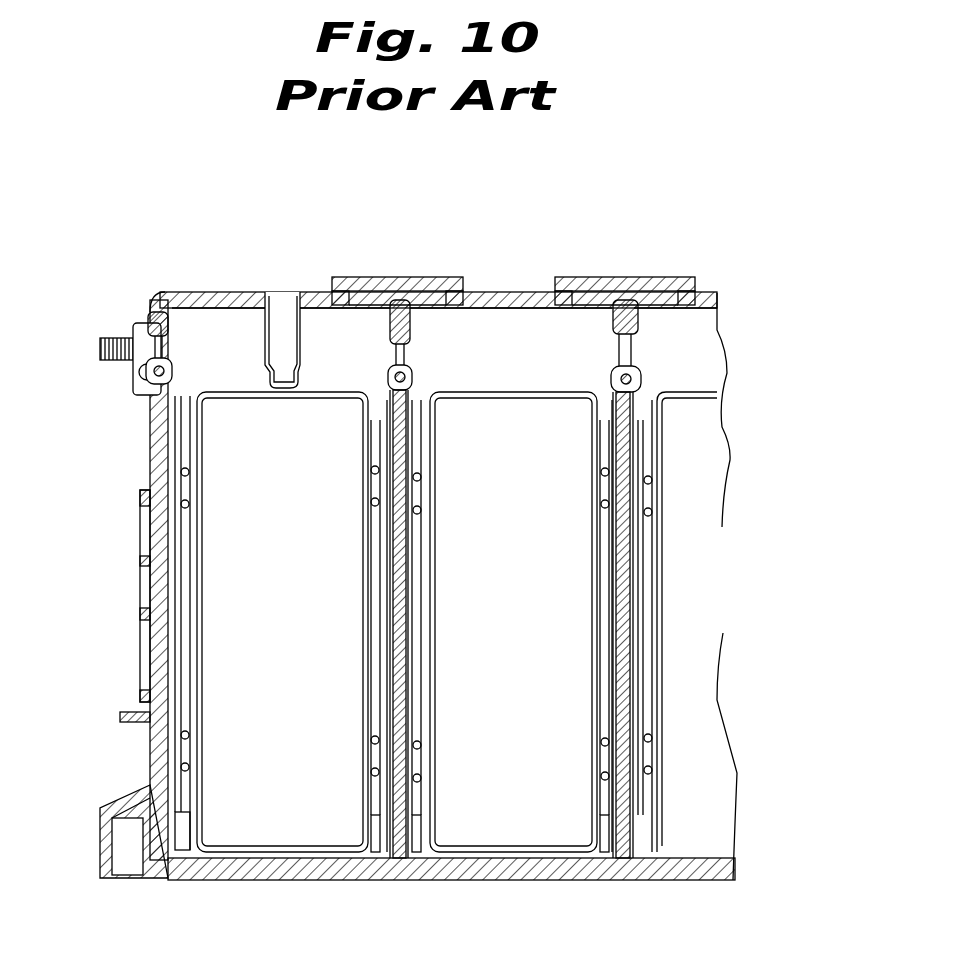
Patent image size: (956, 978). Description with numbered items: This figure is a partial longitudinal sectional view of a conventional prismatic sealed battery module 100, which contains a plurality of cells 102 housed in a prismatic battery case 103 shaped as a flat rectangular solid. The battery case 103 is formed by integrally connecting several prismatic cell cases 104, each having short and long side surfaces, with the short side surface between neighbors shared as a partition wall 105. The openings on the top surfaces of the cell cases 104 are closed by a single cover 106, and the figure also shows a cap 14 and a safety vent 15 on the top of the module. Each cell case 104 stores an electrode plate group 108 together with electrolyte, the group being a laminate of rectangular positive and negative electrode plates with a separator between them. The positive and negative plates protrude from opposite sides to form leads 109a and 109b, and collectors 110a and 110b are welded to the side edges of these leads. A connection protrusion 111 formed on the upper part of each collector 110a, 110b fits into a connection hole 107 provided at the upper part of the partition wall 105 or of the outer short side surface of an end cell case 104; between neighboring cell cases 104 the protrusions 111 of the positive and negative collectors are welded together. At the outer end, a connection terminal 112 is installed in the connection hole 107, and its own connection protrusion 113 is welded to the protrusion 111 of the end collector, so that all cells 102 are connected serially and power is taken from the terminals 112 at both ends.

The prismatic sealed battery module 100 is at (160, 262).
The cell 102 is at (176, 852).
The prismatic battery case 103 is at (138, 584).
The cell case 104 is at (262, 373).
The partition wall 105 is at (400, 448).
The cover 106 is at (210, 292).
The connection hole 107 is at (140, 400).
The electrode plate group 108 is at (282, 559).
The lead for the positive electrode plate 109a is at (413, 562).
The lead for the negative electrode plate 109b is at (372, 578).
The positive collector 110a is at (150, 650).
The negative collector 110b is at (388, 622).
The connection protrusion 111 is at (162, 358).
The connection terminal 112 is at (118, 338).
The connection protrusion of the connection terminal 113 is at (128, 372).
The cap 14 is at (376, 277).
The safety vent 15 is at (283, 330).